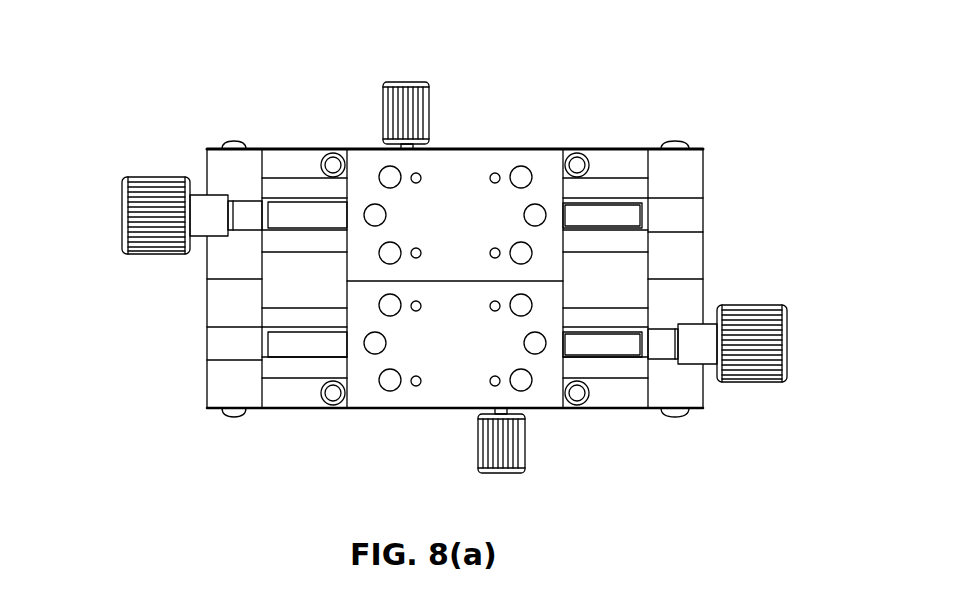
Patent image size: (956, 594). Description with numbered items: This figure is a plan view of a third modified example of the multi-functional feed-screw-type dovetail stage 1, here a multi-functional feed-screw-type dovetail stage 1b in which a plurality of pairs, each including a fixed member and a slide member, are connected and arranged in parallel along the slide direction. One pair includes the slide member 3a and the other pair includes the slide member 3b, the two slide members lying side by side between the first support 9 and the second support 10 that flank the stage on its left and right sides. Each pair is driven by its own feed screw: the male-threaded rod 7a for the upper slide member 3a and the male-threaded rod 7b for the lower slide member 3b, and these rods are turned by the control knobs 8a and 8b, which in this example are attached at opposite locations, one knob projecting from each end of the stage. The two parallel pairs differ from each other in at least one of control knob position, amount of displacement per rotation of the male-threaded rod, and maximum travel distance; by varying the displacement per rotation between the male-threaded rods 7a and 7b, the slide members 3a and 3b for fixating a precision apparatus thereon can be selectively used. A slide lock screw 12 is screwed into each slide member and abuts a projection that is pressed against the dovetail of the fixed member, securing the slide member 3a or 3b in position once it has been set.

The multi-functional feed-screw-type dovetail stage 1 is at (235, 78).
The multi-functional feed-screw-type dovetail stage 1b is at (673, 80).
The slide member 3a is at (470, 180).
The slide member 3b is at (440, 387).
The male-threaded rod 7a is at (598, 212).
The male-threaded rod 7b is at (610, 347).
The control knob 8a is at (120, 222).
The control knob 8b is at (770, 325).
The first support 9 is at (213, 159).
The second support 10 is at (693, 177).
The slide lock screw 12 is at (423, 105).